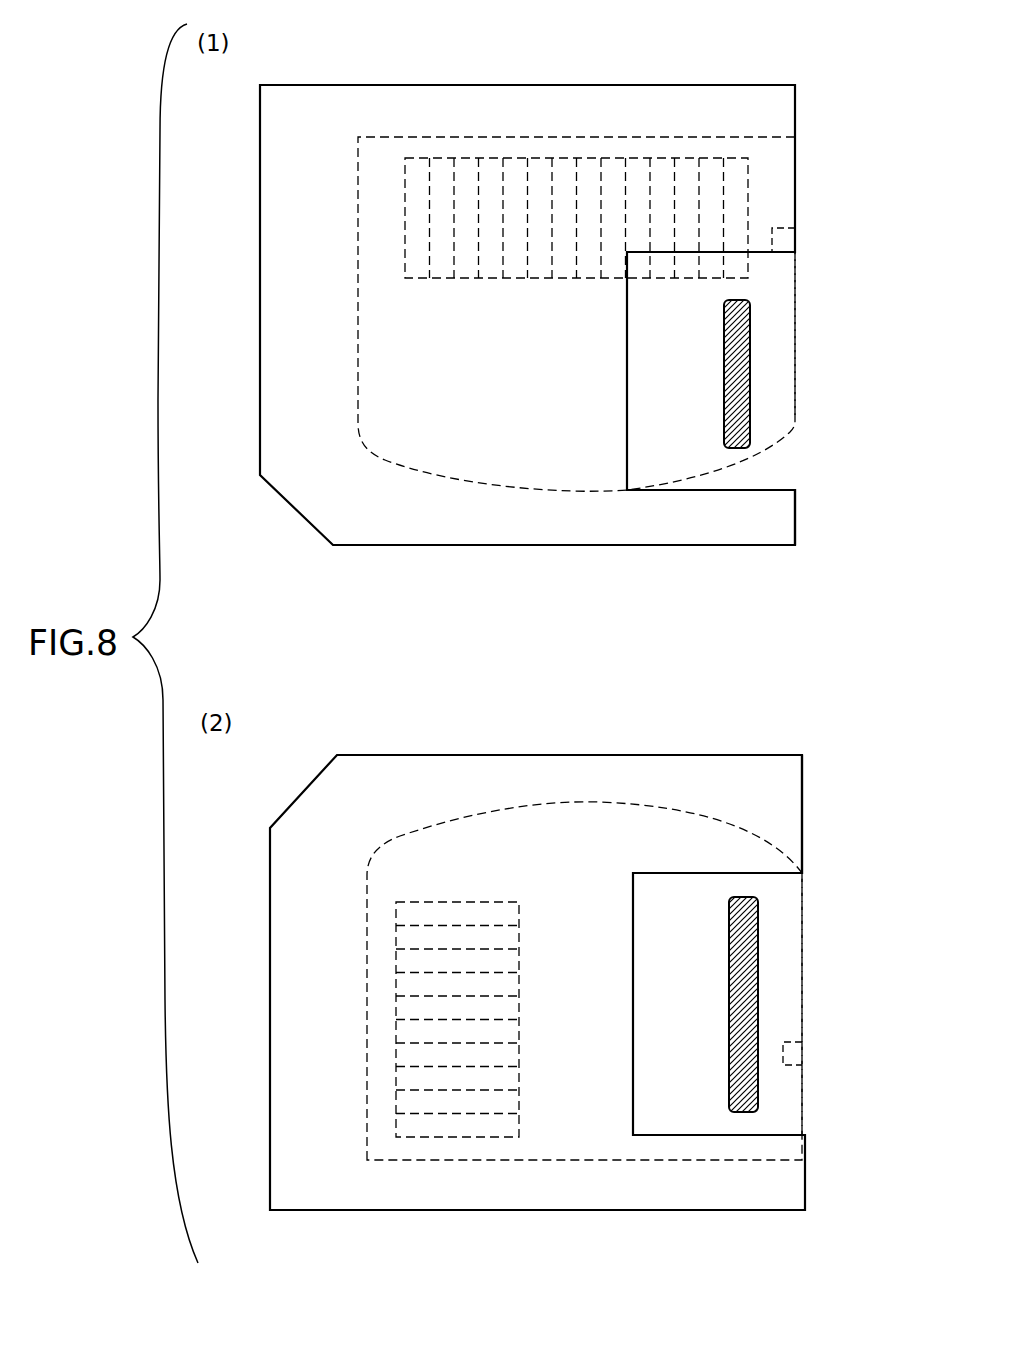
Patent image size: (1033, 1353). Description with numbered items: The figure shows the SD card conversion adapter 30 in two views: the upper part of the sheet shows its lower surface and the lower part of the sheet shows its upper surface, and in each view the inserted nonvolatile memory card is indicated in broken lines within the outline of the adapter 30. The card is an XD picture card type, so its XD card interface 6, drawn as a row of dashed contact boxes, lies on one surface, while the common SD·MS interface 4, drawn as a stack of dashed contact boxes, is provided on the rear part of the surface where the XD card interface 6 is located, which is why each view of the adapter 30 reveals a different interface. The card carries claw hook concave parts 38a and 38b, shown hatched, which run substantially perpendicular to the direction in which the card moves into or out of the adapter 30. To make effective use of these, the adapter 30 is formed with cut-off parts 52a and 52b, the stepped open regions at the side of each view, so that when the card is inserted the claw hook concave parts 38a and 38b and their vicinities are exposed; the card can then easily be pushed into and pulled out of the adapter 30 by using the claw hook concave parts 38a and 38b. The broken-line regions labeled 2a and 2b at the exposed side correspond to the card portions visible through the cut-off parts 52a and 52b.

The SD card conversion adapter 30 is at (298, 86).
The XD card interface 6 is at (520, 160).
The SD·MS interface 4 is at (466, 1138).
The magnet 2a is at (785, 1085).
The magnet 2b is at (777, 282).
The claw hook concave part 38a is at (758, 950).
The claw hook concave part 38b is at (751, 345).
The cut-off part 52a is at (802, 868).
The cut-off part 52b is at (780, 490).